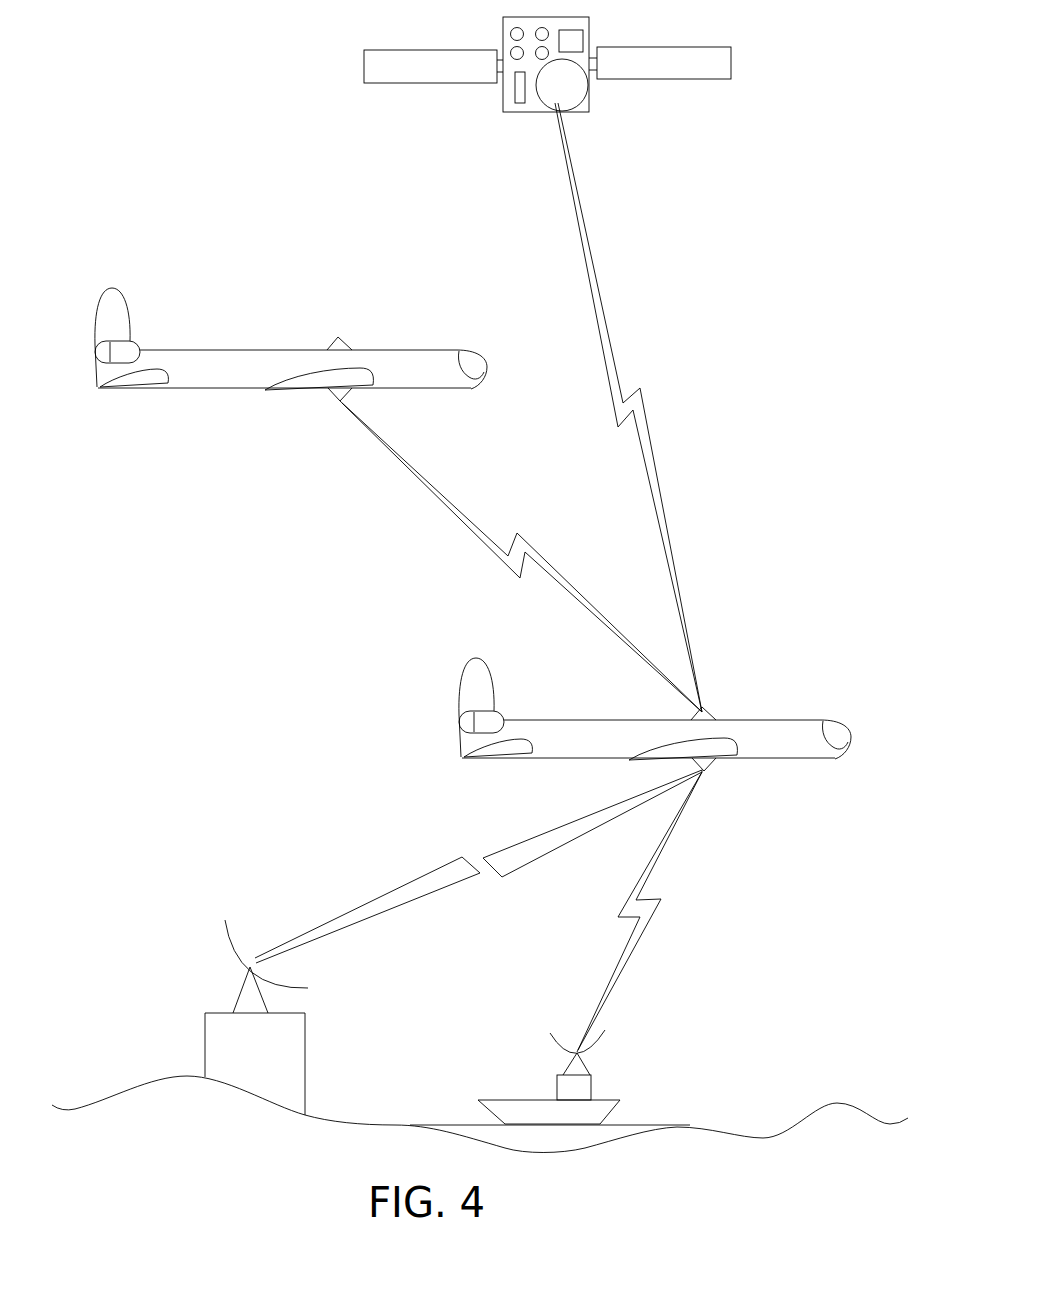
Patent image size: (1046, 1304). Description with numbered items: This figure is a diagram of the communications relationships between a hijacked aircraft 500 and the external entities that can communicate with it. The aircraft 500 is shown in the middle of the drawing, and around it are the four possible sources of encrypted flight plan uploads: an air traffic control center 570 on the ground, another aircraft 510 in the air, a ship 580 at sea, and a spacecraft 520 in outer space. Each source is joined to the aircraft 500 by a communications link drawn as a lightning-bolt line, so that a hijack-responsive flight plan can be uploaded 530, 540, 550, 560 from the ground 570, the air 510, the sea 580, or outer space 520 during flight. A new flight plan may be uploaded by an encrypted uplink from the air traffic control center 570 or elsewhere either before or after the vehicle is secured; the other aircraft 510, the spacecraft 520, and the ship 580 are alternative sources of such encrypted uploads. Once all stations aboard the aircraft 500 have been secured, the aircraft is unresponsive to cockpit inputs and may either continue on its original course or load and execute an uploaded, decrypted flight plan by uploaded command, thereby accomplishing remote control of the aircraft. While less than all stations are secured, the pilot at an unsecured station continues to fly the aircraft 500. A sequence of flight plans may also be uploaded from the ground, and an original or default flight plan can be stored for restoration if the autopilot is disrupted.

The aircraft 500 is at (595, 754).
The another aircraft 510 is at (233, 384).
The spacecraft 520 is at (590, 96).
The upload link from the sea 530 is at (647, 885).
The upload link from the air 540 is at (458, 508).
The upload link from outer space 550 is at (612, 370).
The upload link from the ground 560 is at (463, 860).
The air traffic control center 570 is at (272, 1066).
The ship 580 is at (518, 1100).